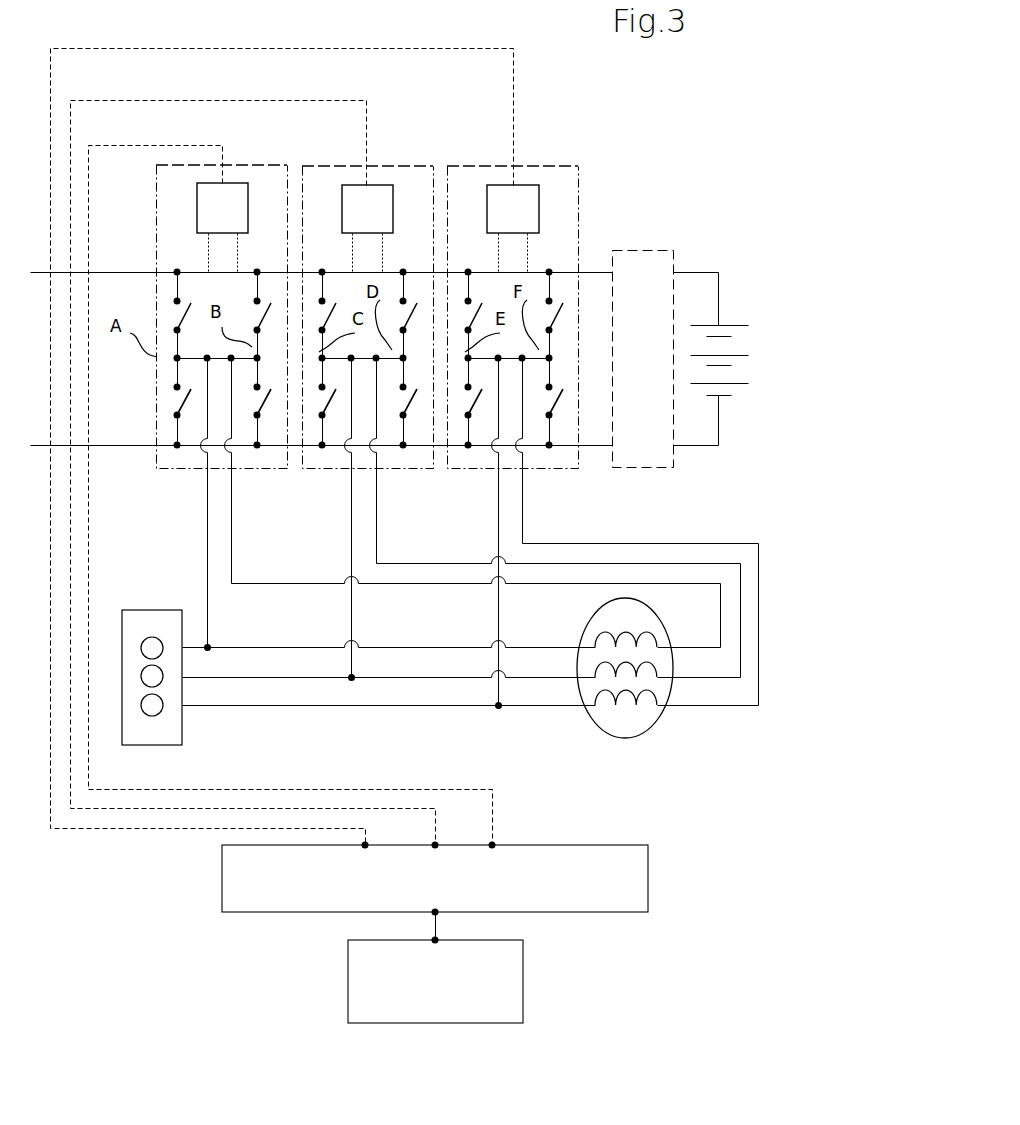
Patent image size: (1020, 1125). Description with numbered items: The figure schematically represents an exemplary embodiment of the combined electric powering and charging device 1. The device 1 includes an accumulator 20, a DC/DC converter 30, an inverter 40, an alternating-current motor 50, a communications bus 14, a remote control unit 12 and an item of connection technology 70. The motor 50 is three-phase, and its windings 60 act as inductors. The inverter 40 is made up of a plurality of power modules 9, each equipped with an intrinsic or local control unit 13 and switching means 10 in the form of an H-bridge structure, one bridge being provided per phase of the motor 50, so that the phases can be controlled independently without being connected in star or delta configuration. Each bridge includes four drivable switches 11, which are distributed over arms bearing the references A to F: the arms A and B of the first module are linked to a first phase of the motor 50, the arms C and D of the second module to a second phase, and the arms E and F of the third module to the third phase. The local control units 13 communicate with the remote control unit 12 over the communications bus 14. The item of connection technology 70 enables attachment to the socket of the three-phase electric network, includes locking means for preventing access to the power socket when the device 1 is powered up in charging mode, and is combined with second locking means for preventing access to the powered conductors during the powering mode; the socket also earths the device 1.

The combined electric powering and charging device 1 is at (147, 880).
The power module 9 is at (240, 160).
The switching means 10 is at (162, 405).
The drivable switch 11 is at (170, 311).
The remote control unit 12 is at (435, 967).
The intrinsic control unit 13 is at (197, 215).
The communications bus 14 is at (435, 879).
The accumulator 20 is at (728, 316).
The DC/DC converter 30 is at (630, 252).
The inverter 40 is at (146, 457).
The alternating-current motor 50 is at (582, 610).
The windings 60 is at (627, 710).
The item of connection technology 70 is at (133, 620).